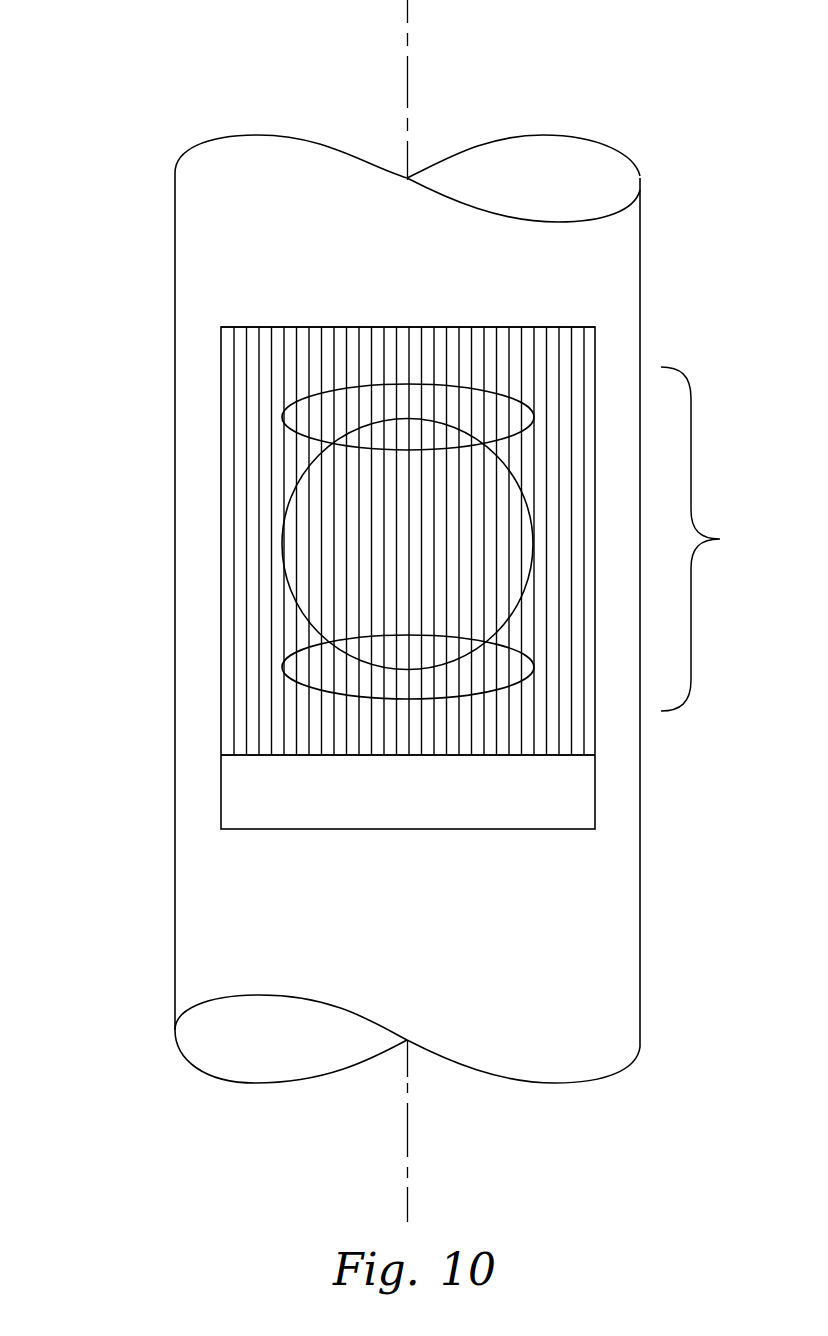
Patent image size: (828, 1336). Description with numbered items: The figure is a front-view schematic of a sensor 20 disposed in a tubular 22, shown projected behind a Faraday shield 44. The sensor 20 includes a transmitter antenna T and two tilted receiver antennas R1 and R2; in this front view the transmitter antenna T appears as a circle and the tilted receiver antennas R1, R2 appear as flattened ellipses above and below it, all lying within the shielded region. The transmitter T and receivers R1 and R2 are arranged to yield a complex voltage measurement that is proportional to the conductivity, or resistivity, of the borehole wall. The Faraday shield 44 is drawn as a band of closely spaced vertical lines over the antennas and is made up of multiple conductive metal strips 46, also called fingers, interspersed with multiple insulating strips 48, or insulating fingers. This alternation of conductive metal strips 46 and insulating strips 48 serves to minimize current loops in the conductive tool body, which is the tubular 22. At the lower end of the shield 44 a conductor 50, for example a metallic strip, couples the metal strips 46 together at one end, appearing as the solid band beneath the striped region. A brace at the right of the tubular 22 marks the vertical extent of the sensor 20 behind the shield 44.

The sensor 20 is at (709, 539).
The tubular 22 is at (630, 279).
The Faraday shield 44 is at (266, 501).
The conductive metal strips 46 is at (233, 341).
The insulating strips 48 is at (240, 743).
The conductor 50 is at (408, 820).
The tilted receiver antenna R1 is at (279, 417).
The tilted receiver antenna R2 is at (279, 668).
The transmitter antenna T is at (279, 563).